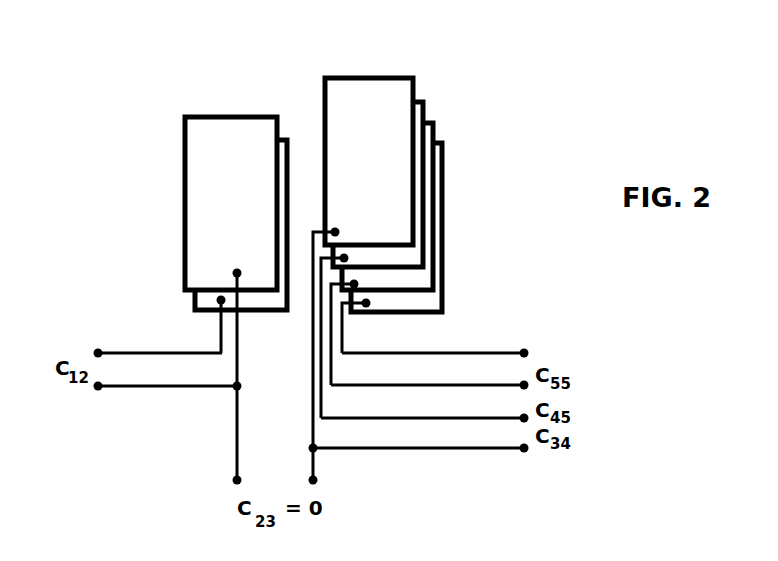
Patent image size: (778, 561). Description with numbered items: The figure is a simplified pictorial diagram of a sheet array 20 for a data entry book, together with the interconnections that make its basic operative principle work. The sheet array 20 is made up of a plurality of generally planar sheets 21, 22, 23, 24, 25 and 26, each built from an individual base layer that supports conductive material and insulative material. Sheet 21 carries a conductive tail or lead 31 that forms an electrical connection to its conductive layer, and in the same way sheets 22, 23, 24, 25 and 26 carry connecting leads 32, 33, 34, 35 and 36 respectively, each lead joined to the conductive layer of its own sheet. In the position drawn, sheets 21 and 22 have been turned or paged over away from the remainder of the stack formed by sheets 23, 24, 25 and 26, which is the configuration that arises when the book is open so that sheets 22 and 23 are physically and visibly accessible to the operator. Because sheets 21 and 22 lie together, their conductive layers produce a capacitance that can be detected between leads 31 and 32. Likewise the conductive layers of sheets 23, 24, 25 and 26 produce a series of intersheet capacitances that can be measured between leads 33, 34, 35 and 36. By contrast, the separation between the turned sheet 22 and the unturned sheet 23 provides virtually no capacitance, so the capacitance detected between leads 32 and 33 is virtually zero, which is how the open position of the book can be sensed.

The sheet array 20 is at (148, 53).
The sheet 21 is at (193, 299).
The sheet 22 is at (183, 138).
The sheet 23 is at (413, 78).
The sheet 24 is at (423, 102).
The sheet 25 is at (433, 123).
The sheet 26 is at (442, 165).
The conductive tail or lead 31 is at (156, 352).
The connecting lead 32 is at (173, 386).
The connecting lead 33 is at (381, 452).
The connecting lead 34 is at (446, 416).
The connecting lead 35 is at (462, 385).
The connecting lead 36 is at (480, 352).